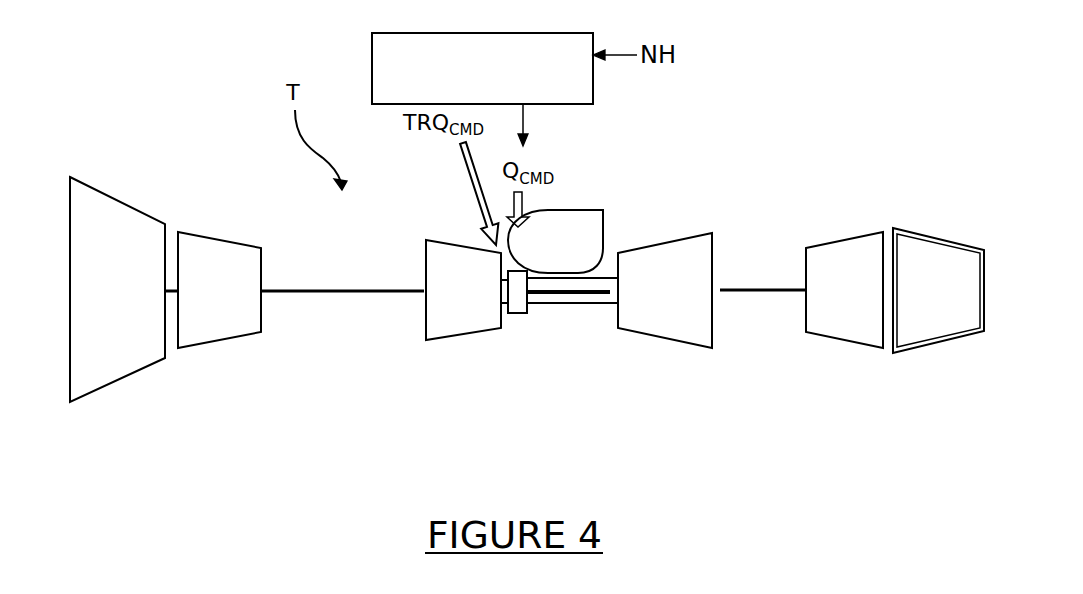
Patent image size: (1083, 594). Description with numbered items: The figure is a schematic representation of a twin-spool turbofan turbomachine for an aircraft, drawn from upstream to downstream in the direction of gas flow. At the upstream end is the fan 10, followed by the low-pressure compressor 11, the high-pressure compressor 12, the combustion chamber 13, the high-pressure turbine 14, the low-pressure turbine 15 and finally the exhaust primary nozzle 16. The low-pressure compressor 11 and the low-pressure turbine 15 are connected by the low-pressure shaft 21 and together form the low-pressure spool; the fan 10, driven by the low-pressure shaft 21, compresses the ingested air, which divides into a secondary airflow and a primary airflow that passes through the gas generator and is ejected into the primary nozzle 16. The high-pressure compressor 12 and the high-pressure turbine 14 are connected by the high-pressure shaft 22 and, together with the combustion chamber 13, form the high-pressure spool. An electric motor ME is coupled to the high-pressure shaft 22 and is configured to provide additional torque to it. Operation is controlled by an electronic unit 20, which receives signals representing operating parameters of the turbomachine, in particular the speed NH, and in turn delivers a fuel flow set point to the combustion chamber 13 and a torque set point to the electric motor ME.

The fan 10 is at (115, 198).
The low-pressure compressor 11 is at (210, 237).
The high-pressure compressor 12 is at (435, 341).
The combustion chamber 13 is at (555, 210).
The high-pressure turbine 14 is at (683, 233).
The low-pressure turbine 15 is at (848, 238).
The exhaust primary nozzle 16 is at (936, 238).
The electronic unit 20 is at (482, 68).
The low-pressure shaft 21 is at (373, 293).
The high-pressure shaft 22 is at (575, 304).
The electric motor ME is at (510, 319).